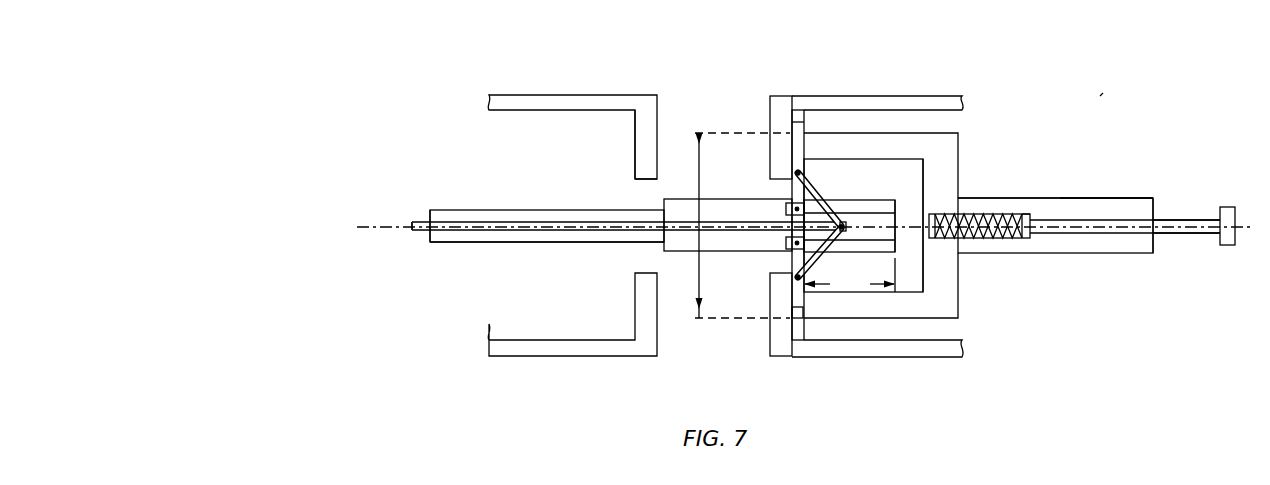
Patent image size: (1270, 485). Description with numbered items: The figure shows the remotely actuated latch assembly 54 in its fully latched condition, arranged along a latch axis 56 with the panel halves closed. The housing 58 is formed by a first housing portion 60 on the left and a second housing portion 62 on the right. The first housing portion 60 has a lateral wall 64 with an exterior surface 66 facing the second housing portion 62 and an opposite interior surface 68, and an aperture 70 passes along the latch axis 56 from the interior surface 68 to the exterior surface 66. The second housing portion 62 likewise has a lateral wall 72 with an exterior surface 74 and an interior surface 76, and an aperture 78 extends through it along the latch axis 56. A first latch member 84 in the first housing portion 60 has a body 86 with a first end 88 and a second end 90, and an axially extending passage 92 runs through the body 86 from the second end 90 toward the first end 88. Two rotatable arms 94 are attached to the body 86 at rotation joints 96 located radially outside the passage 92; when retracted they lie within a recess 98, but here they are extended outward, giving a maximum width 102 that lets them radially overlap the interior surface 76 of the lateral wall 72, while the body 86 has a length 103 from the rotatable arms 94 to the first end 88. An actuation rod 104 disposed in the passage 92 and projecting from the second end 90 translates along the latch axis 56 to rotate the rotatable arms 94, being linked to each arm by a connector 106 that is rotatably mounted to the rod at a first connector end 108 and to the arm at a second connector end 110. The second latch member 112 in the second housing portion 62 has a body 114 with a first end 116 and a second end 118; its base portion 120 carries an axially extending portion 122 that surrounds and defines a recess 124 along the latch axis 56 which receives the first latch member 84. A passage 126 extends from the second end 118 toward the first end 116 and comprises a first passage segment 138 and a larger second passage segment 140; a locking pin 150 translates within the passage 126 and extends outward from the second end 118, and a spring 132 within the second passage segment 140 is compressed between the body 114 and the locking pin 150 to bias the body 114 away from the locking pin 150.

The latch assembly 54 is at (1103, 93).
The latch axis 56 is at (373, 230).
The housing 58 is at (560, 88).
The first housing portion 60 is at (591, 204).
The second housing portion 62 is at (862, 78).
The lateral wall 64 is at (659, 132).
The exterior surface 66 is at (657, 160).
The interior surface 68 is at (634, 157).
The aperture 70 is at (661, 265).
The lateral wall 72 is at (762, 117).
The exterior surface 74 is at (768, 152).
The interior surface 76 is at (804, 117).
The aperture 78 is at (773, 265).
The first latch member 84 is at (490, 197).
The body 86 is at (577, 238).
The first end 88 is at (900, 205).
The second end 90 is at (428, 213).
The passage 92 is at (547, 238).
The rotatable arms 94 is at (800, 170).
The rotation joints 96 is at (785, 209).
The recess 98 is at (880, 236).
The maximum width 102 is at (688, 243).
The length 103 is at (850, 277).
The actuation rod 104 is at (455, 240).
The connector 106 is at (792, 212).
The first connector end 108 is at (794, 158).
The second connector end 110 is at (868, 198).
The second latch member 112 is at (1082, 270).
The body 114 is at (1027, 247).
The first end 116 is at (792, 307).
The second end 118 is at (1153, 208).
The base portion 120 is at (1135, 265).
The axially extending portion 122 is at (937, 126).
The recess 124 is at (907, 172).
The passage 126 is at (1078, 212).
The spring 132 is at (985, 237).
The first passage segment 138 is at (1115, 212).
The second passage segment 140 is at (1025, 212).
The locking pin 150 is at (1228, 233).